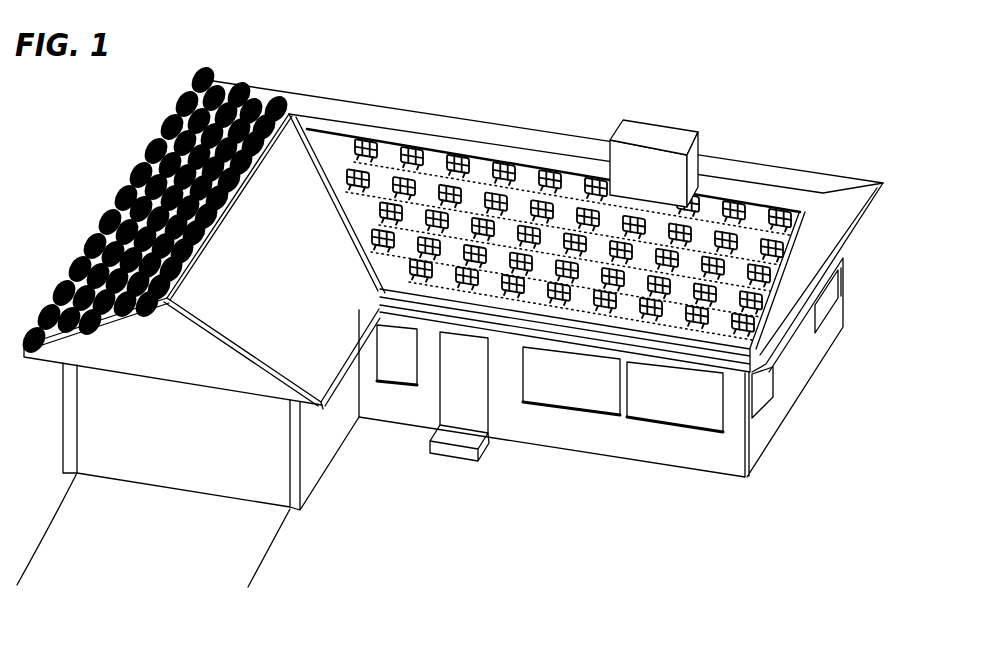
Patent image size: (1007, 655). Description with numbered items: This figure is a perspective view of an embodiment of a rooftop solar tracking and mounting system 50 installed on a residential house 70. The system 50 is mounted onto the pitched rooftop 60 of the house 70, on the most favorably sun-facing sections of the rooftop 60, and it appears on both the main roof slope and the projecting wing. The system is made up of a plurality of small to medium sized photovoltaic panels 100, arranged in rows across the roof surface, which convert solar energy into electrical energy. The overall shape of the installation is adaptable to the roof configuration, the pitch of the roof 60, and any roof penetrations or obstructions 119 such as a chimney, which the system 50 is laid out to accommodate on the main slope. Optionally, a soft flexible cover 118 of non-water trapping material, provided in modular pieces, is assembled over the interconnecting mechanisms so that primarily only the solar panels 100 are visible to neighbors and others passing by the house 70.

The photovoltaic panels 100 is at (404, 182).
The soft flexible cover 118 is at (280, 100).
The obstruction 119 is at (694, 168).
The rooftop solar tracking and mounting system 50 is at (770, 184).
The pitched rooftop 60 is at (822, 214).
The residential house 70 is at (795, 376).